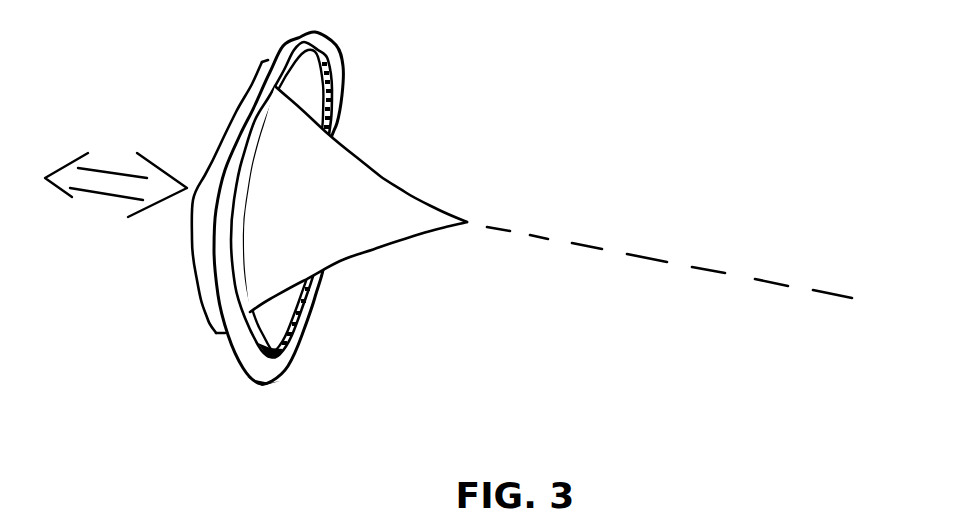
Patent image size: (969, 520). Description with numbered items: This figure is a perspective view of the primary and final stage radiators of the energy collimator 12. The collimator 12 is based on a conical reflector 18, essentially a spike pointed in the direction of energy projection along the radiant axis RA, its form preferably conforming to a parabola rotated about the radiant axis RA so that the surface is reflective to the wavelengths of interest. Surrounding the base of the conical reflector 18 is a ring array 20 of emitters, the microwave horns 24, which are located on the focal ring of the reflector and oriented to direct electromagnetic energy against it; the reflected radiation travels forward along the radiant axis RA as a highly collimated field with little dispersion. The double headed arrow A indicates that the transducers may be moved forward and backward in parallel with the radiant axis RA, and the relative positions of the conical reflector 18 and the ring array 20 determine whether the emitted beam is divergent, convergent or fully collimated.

The energy collimator 12 is at (438, 194).
The conical reflector 18 is at (378, 223).
The ring array 20 is at (336, 113).
The microwave horns 24 is at (334, 74).
The double headed arrow A is at (116, 165).
The radiant axis RA is at (669, 277).